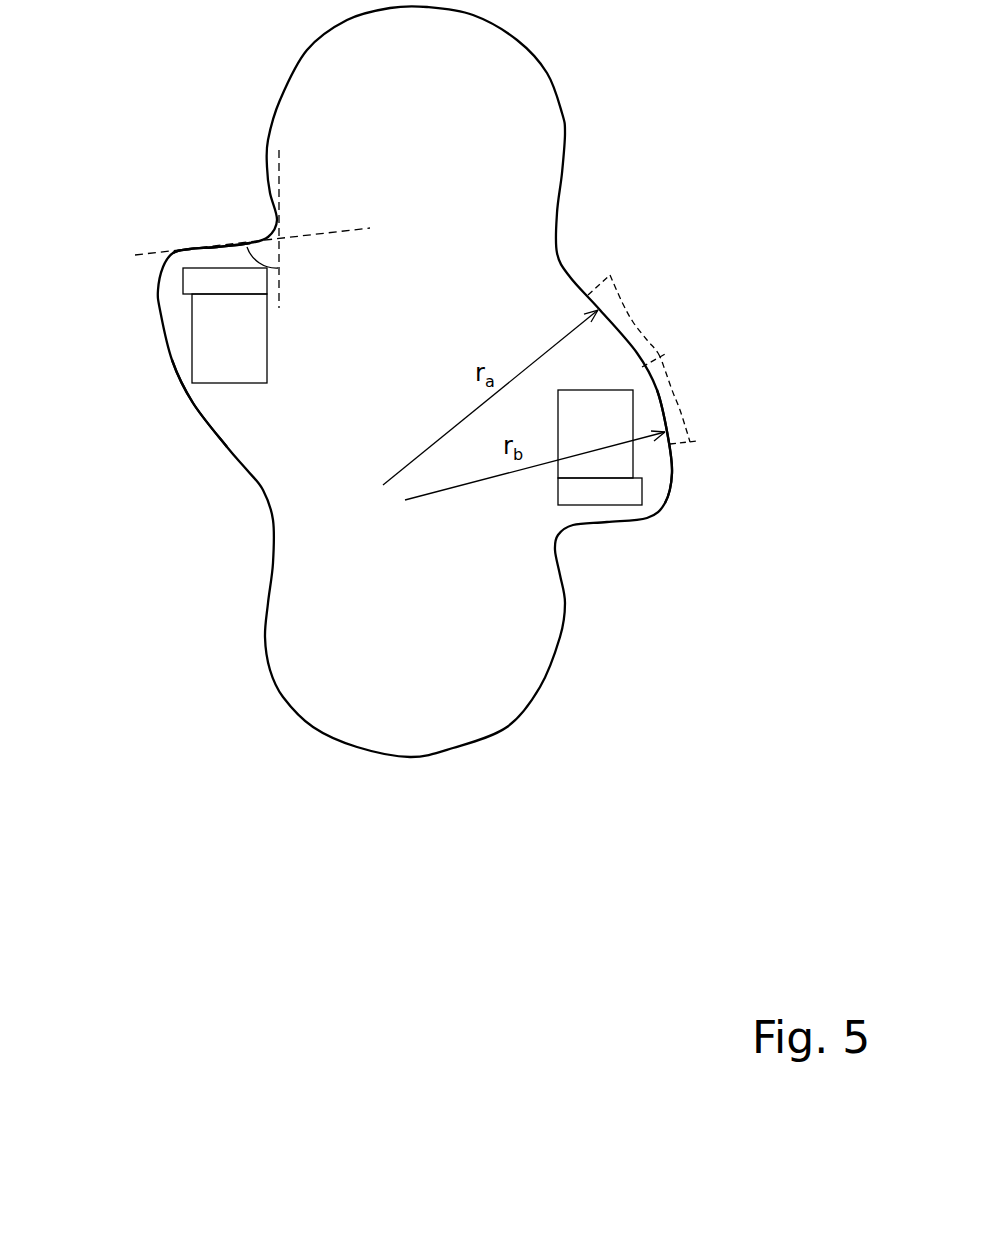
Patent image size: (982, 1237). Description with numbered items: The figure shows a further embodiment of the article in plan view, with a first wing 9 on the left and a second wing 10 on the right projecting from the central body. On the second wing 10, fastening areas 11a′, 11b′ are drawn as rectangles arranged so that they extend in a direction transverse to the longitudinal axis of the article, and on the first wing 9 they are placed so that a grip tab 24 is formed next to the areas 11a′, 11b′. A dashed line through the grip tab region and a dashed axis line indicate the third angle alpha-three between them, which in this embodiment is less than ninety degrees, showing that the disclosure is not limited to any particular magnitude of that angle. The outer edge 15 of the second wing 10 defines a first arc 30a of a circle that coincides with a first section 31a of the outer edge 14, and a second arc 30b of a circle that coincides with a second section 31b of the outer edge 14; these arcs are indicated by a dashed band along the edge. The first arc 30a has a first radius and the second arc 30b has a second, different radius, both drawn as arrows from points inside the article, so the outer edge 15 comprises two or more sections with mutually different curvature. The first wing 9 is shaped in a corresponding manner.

The first wing 9 is at (235, 445).
The outer edge 14 is at (193, 405).
The grip tab 24 is at (194, 252).
The area 11a′ is at (192, 285).
The area 11b′ is at (200, 343).
The first arc 30a is at (608, 318).
The first section 31a is at (636, 320).
The second arc 30b is at (650, 391).
The second section 31b is at (683, 411).
The outer edge 15 is at (672, 467).
The second wing 10 is at (650, 500).